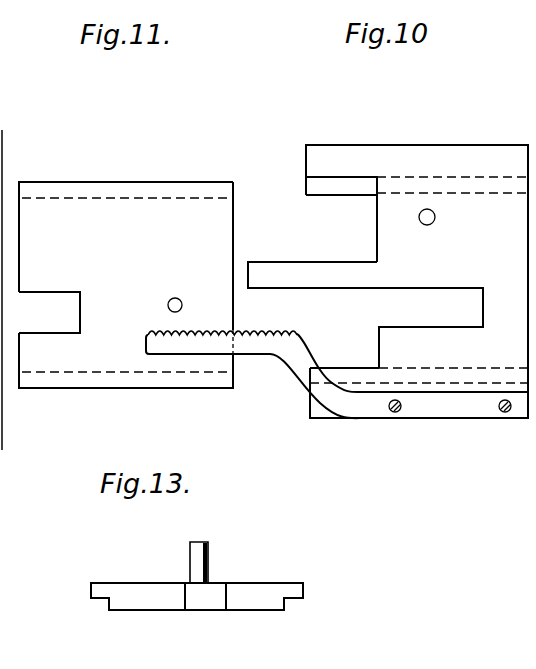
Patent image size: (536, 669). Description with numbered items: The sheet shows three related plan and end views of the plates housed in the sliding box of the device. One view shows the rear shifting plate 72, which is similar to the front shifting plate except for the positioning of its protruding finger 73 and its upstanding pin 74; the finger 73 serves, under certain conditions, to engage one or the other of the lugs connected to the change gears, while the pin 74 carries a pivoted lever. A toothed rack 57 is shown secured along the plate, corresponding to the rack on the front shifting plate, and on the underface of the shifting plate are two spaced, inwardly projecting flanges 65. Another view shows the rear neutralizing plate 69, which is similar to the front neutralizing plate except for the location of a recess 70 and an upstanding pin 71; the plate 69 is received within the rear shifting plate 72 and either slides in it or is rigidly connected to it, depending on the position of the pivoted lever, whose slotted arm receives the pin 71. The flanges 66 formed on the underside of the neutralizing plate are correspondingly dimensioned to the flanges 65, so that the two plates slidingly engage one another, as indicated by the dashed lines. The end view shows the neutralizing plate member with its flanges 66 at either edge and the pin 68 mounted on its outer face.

In FIG. 10, the flexible toothed rack 57 is at (274, 343).
In FIG. 10, the inwardly projecting flange 65 is at (331, 187).
In FIG. 11, the flange 66 is at (122, 190).
In FIG. 13, the flange 66 is at (99, 593).
In FIG. 13, the pin 68 is at (203, 562).
In FIG. 11, the rear neutralizing plate 69 is at (126, 285).
In FIG. 11, the recess 70 is at (49, 312).
In FIG. 11, the upstanding pin 71 is at (176, 298).
In FIG. 10, the rear shifting plate 72 is at (417, 281).
In FIG. 10, the protruding finger 73 is at (277, 278).
In FIG. 10, the upstanding pin 74 is at (427, 225).